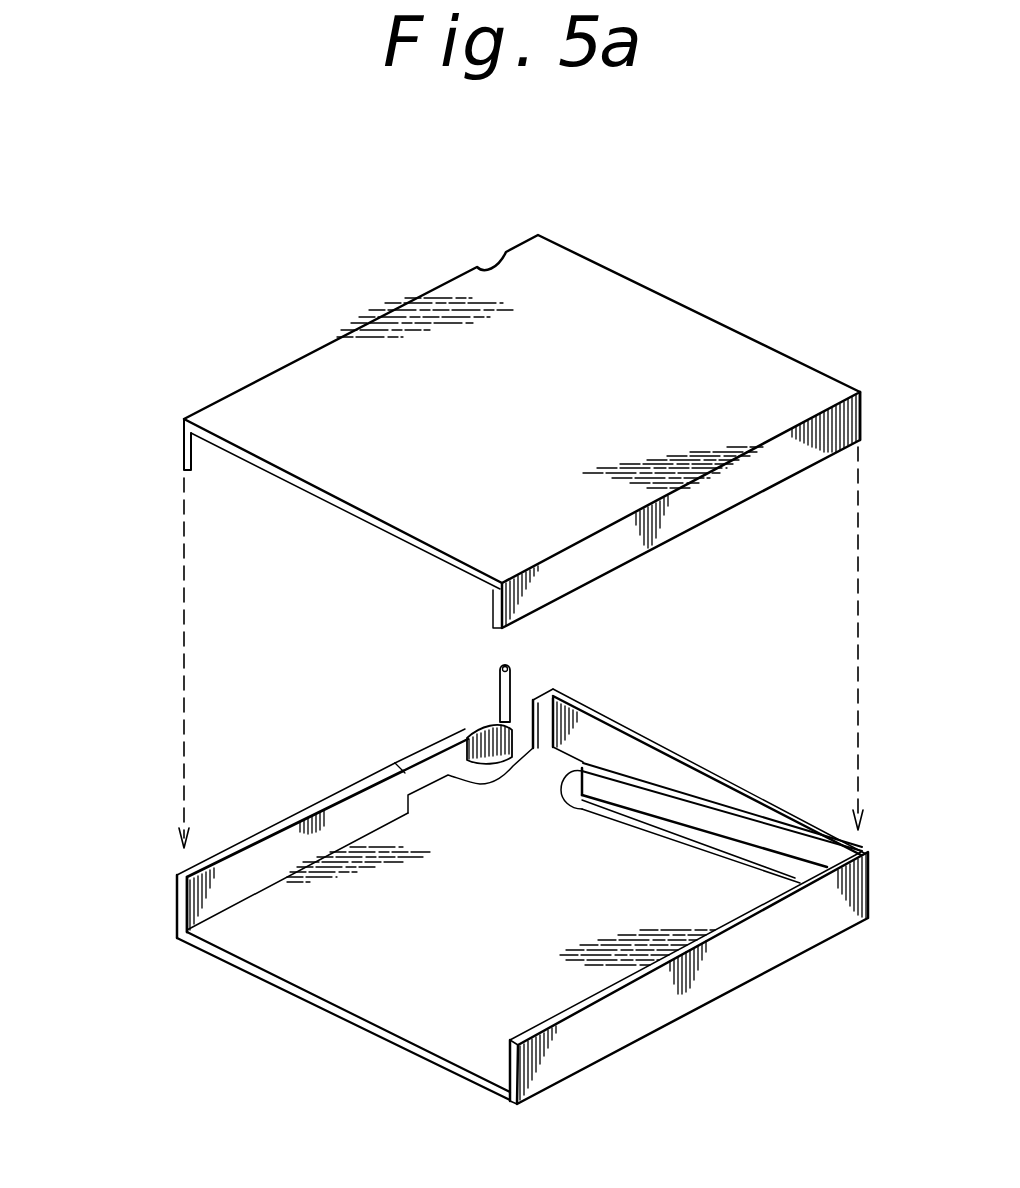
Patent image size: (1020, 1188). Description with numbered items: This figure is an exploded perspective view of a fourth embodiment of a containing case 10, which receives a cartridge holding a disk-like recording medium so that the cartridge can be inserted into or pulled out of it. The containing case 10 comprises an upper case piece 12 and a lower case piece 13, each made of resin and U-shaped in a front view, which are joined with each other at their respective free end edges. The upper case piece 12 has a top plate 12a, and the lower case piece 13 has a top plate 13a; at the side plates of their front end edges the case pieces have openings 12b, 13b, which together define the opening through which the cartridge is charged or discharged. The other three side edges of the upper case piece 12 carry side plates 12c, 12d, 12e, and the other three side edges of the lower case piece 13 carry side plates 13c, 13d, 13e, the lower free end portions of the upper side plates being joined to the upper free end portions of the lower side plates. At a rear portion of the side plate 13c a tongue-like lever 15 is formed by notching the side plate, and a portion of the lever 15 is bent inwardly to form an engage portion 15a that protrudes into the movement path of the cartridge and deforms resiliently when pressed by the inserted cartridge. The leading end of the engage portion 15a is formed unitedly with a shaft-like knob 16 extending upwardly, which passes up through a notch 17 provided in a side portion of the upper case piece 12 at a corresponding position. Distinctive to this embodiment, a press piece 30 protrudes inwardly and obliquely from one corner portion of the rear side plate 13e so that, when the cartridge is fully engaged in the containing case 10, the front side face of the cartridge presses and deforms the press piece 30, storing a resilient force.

The containing case 10 is at (138, 620).
The upper case piece 12 is at (459, 394).
The top plate 12a is at (672, 382).
The opening 12b is at (334, 500).
The side plate 12c is at (182, 446).
The side plate 12d is at (740, 492).
The side plate 12e is at (810, 366).
The notch 17 is at (493, 256).
The lower case piece 13 is at (534, 872).
The top plate 13a is at (485, 965).
The opening 13b is at (305, 988).
The side plate 13c is at (298, 810).
The side plate 13d is at (812, 930).
The rear side plate 13e is at (690, 758).
The lever 15 is at (410, 772).
The engage portion 15a is at (486, 746).
The knob 16 is at (511, 670).
The press piece 30 is at (715, 820).